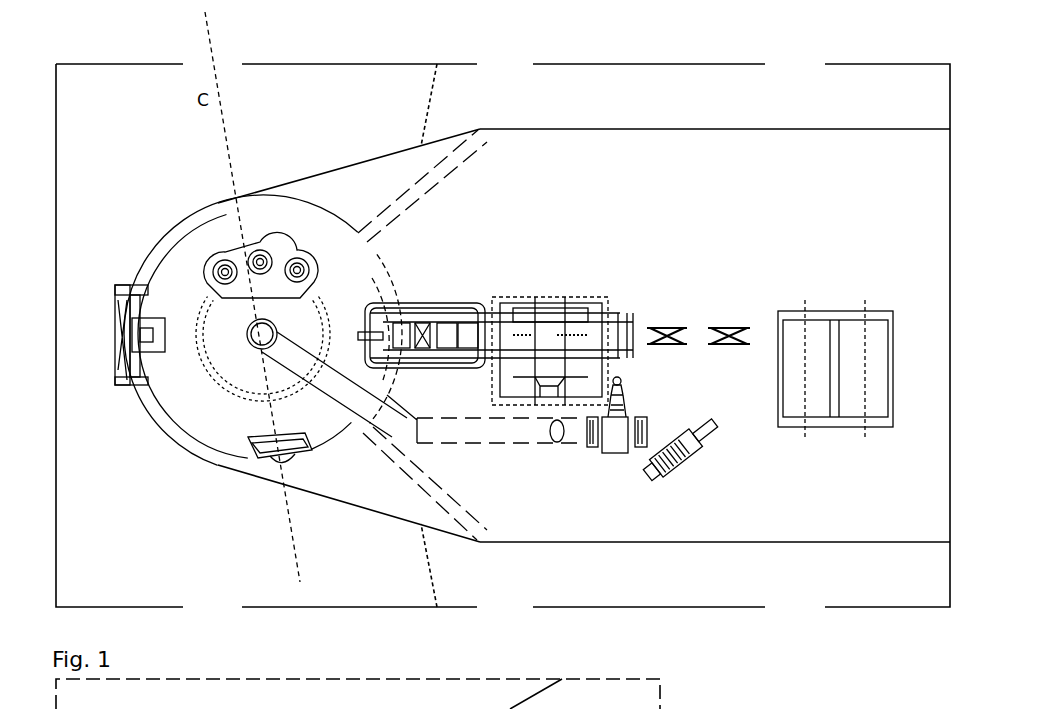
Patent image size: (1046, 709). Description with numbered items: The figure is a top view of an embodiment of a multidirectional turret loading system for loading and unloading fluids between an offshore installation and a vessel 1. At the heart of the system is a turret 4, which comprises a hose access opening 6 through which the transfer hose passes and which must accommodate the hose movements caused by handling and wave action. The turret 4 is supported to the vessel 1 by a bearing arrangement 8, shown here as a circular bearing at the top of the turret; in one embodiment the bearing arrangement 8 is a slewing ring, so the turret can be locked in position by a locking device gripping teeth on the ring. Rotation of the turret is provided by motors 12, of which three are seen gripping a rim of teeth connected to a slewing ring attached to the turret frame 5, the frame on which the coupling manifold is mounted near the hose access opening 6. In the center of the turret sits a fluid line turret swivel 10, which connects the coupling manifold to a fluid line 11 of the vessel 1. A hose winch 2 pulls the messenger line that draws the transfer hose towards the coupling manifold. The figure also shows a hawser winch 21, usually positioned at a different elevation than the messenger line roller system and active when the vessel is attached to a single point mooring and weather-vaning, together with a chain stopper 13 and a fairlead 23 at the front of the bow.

The vessel 1 is at (480, 92).
The hose winch 2 is at (812, 337).
The turret 4 is at (178, 258).
The turret frame 5 is at (172, 443).
The hose access opening 6 is at (282, 462).
The bearing arrangement 8 is at (232, 400).
The fluid line turret swivel 10 is at (243, 338).
The fluid line 11 is at (445, 437).
The motor 12 is at (260, 248).
The chain stopper 13 is at (495, 326).
The hawser winch 21 is at (550, 341).
The fairlead 23 is at (123, 335).